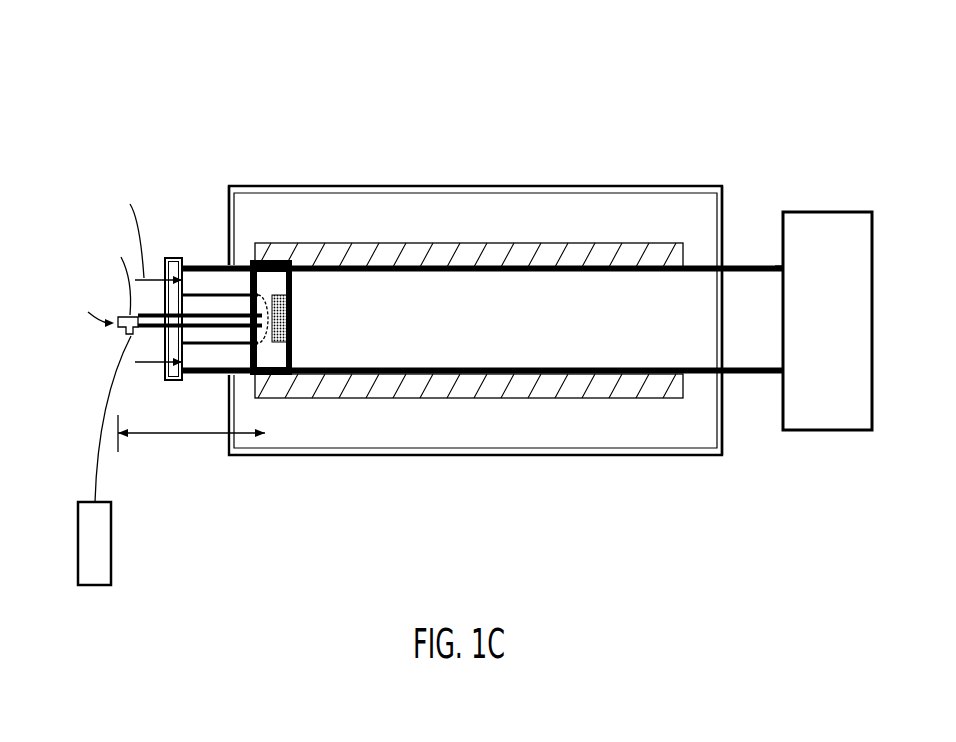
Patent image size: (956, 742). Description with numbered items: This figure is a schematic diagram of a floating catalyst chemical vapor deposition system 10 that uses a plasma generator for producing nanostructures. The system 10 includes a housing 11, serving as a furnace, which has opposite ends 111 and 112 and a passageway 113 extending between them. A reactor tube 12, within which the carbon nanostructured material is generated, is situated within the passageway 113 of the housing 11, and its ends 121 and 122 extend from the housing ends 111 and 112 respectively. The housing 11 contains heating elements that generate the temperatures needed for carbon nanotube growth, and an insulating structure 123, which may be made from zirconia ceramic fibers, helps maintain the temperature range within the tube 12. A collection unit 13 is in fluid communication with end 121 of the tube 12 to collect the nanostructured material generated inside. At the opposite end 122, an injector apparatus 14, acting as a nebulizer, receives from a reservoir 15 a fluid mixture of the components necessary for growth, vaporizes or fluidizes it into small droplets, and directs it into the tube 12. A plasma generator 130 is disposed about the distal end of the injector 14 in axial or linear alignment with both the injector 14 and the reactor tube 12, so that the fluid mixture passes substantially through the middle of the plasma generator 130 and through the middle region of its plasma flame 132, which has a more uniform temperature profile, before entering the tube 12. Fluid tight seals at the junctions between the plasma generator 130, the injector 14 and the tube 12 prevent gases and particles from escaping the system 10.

The system 10 is at (565, 47).
The housing 11 is at (395, 185).
The end 111 is at (723, 200).
The end 112 is at (228, 199).
The passageway 113 is at (508, 231).
The tube 12 is at (703, 265).
The end 121 is at (779, 266).
The end 122 is at (170, 258).
The insulating structure 123 is at (578, 244).
The collection unit 13 is at (832, 212).
The injector apparatus 14 is at (210, 347).
The reservoir 15 is at (112, 540).
The plasma generator 130 is at (271, 262).
The plasma flame 132 is at (281, 340).